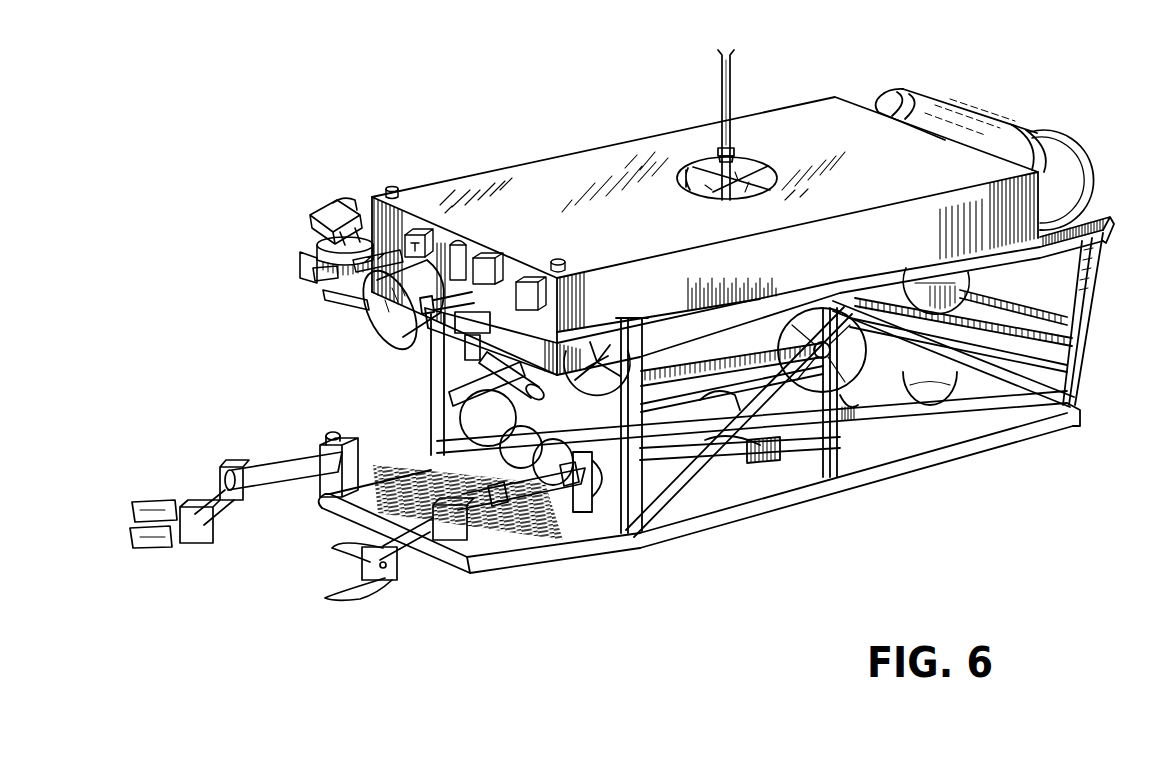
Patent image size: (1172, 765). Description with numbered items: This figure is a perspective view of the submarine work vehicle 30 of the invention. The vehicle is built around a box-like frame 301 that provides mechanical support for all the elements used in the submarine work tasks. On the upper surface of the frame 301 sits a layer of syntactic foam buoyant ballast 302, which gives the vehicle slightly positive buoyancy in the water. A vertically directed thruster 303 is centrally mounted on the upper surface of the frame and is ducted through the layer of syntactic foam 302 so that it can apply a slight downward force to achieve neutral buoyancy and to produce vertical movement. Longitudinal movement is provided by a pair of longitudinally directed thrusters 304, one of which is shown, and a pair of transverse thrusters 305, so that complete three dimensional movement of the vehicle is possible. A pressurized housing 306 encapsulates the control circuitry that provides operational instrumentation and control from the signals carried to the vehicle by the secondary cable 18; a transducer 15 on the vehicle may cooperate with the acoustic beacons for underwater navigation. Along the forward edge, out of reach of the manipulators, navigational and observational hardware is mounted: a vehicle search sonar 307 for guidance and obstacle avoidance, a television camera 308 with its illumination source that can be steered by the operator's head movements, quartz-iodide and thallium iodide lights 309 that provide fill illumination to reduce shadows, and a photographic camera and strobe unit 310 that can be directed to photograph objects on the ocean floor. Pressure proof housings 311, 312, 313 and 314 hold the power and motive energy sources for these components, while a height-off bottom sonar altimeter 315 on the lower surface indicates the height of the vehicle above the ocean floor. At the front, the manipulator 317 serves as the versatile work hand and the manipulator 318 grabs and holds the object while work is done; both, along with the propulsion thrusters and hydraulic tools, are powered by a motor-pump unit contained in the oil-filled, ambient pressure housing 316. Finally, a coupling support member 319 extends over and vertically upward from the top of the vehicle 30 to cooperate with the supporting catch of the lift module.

The submarine work vehicle 30 is at (262, 100).
The secondary cable 18 is at (721, 73).
The transducer 15 is at (395, 190).
The box-like frame 301 is at (947, 460).
The syntactic foam buoyant ballast 302 is at (814, 268).
The vertically directed thruster 303 is at (684, 182).
The longitudinally directed thruster 304 is at (848, 352).
The transverse thruster 305 is at (607, 360).
The pressurized housing 306 is at (1083, 160).
The vehicle search sonar 307 is at (322, 210).
The television camera 308 is at (441, 375).
The quartz-iodide and thallium iodide lights 309 is at (300, 262).
The photographic camera and strobe unit 310 is at (376, 321).
The pressure proof housing 311 is at (470, 433).
The pressure proof housing 312 is at (503, 460).
The pressure proof housing 313 is at (700, 420).
The pressure proof housing 314 is at (737, 455).
The height-off bottom sonar altimeter 315 is at (851, 410).
The oil-filled ambient pressure housing 316 is at (947, 400).
The manipulator 317 is at (284, 462).
The manipulator 318 is at (410, 553).
The coupling support member 319 is at (733, 153).